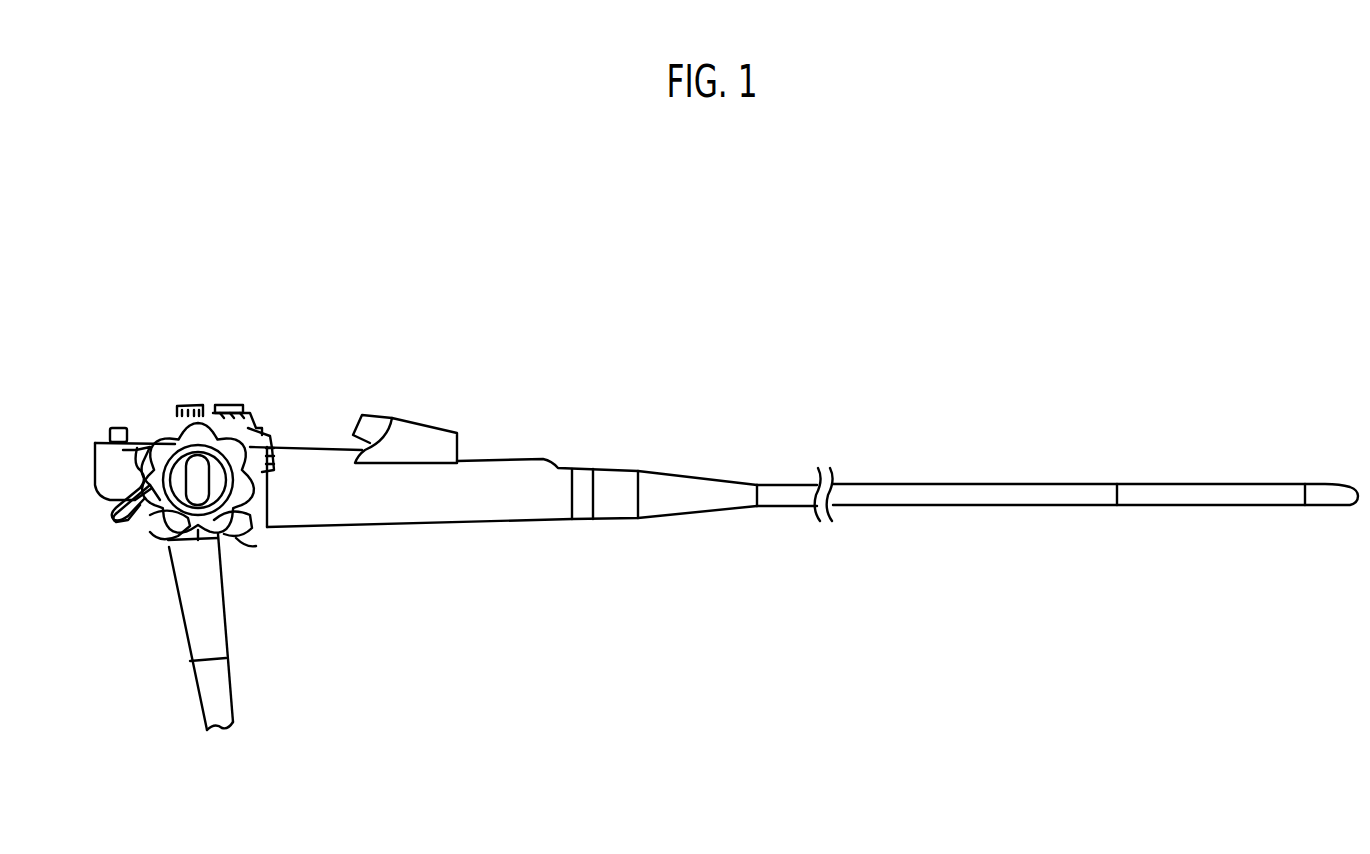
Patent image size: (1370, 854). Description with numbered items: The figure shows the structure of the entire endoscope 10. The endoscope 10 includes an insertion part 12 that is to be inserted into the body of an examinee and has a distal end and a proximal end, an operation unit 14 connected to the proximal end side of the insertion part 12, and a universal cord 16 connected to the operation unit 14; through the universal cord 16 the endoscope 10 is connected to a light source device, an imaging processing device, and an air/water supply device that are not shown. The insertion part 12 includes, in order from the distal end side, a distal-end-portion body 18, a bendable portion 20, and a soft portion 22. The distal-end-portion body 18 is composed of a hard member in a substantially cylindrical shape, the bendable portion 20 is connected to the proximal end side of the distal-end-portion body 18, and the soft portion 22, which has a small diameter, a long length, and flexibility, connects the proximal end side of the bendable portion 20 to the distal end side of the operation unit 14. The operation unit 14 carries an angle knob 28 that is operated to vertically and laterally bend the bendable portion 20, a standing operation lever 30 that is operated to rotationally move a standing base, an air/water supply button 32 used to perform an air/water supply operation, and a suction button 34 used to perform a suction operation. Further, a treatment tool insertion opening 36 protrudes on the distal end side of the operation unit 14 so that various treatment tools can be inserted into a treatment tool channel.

The endoscope 10 is at (140, 554).
The insertion part 12 is at (1059, 448).
The operation unit 14 is at (403, 518).
The universal cord 16 is at (223, 703).
The distal-end-portion body 18 is at (1331, 468).
The bendable portion 20 is at (1170, 491).
The soft portion 22 is at (974, 488).
The angle knob 28 is at (203, 538).
The standing operation lever 30 is at (125, 512).
The air/water supply button 32 is at (227, 404).
The suction button 34 is at (192, 405).
The treatment tool insertion opening 36 is at (362, 418).